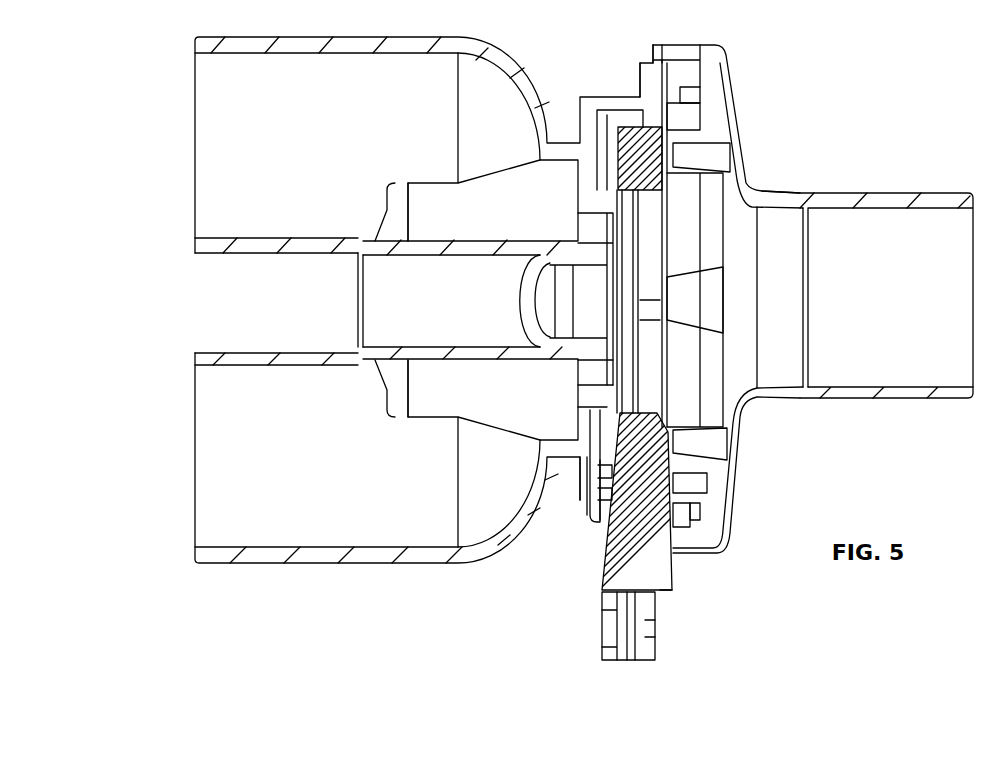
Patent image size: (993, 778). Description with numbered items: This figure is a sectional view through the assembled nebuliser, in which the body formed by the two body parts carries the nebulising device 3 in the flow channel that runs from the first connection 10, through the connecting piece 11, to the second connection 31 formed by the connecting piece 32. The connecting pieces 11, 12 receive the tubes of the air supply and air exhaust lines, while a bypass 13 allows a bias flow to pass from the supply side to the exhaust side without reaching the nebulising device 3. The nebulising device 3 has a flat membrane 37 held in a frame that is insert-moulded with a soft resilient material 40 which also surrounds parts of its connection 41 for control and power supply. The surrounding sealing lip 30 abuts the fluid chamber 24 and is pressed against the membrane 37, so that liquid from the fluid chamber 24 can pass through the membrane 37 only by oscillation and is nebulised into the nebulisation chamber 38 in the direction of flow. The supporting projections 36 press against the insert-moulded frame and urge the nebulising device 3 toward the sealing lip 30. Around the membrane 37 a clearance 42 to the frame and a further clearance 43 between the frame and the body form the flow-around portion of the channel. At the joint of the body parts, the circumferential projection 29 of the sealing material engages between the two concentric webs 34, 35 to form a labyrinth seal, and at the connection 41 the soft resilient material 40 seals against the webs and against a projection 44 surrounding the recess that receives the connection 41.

The nebulising device 3 is at (665, 620).
The first connection 10 is at (402, 300).
The connecting piece 11 is at (243, 250).
The connecting piece 12 is at (387, 435).
The bypass 13 is at (448, 213).
The fluid chamber 24 is at (585, 282).
The circumferential projection 29 is at (680, 70).
The sealing lip 30 is at (590, 383).
The second connection 31 is at (918, 185).
The connecting piece 32 is at (915, 400).
The web 34 is at (692, 530).
The web 35 is at (678, 498).
The supporting projection 36 is at (680, 150).
The membrane 37 is at (663, 272).
The nebulisation chamber 38 is at (655, 325).
The soft resilient material 40 is at (660, 130).
The connection 41 is at (600, 648).
The clearance 42 is at (594, 497).
The clearance 43 is at (630, 118).
The projection 44 is at (603, 555).